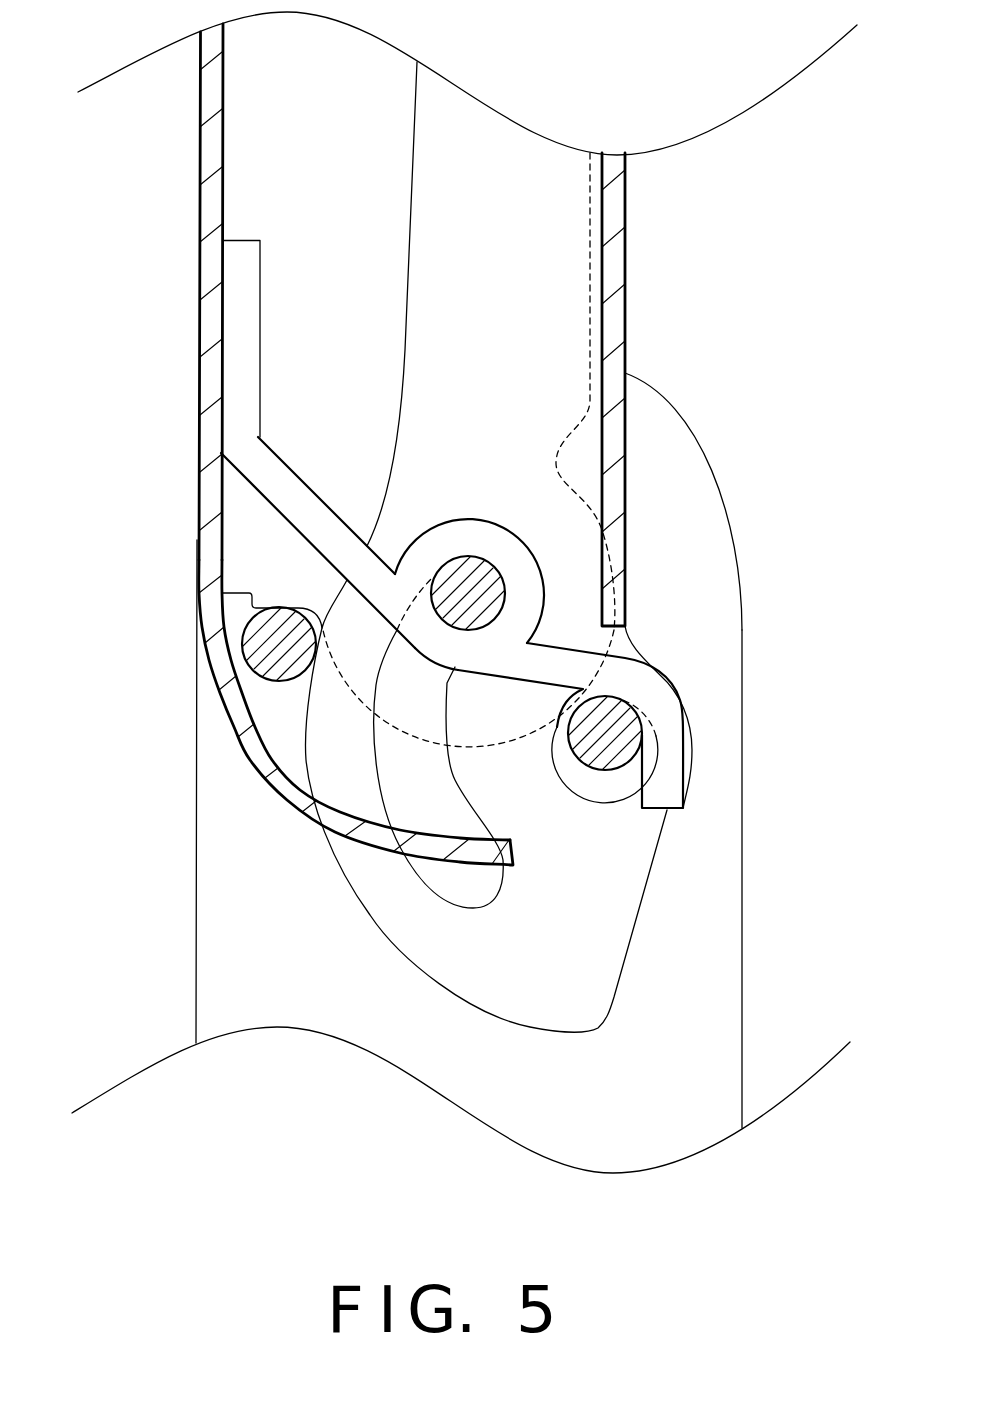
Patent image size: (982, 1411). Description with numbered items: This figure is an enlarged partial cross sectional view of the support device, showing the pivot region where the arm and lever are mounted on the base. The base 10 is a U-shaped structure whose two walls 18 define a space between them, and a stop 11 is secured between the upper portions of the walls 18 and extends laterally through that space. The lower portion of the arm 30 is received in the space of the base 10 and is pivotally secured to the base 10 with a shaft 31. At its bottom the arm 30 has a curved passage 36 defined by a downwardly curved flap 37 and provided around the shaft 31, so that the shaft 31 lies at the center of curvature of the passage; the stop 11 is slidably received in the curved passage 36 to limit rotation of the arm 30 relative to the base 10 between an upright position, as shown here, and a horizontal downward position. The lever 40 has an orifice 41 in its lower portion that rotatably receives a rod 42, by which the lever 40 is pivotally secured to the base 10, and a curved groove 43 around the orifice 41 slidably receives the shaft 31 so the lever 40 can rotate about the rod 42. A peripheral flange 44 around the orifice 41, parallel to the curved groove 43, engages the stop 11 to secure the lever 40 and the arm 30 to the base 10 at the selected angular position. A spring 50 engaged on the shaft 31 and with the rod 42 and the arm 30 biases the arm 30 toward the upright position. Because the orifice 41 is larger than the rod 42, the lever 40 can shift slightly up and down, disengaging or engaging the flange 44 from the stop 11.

The base 10 is at (742, 832).
The walls 18 is at (720, 984).
The arm 30 is at (200, 217).
The downwardly curved flap 37 is at (273, 783).
The curved passage 36 is at (288, 738).
The peripheral flange 44 is at (304, 712).
The stop 11 is at (243, 643).
The shaft 31 is at (468, 590).
The spring 50 is at (482, 518).
The curved groove 43 is at (420, 787).
The orifice 41 is at (581, 777).
The rod 42 is at (605, 745).
The lever 40 is at (625, 207).